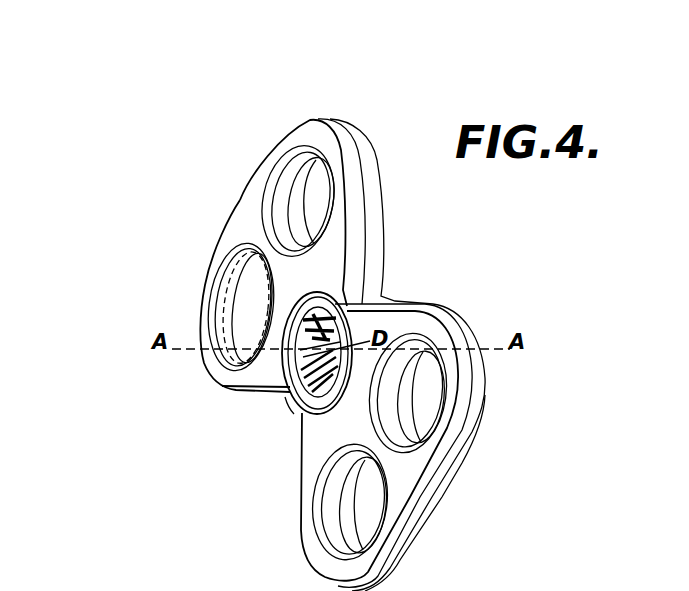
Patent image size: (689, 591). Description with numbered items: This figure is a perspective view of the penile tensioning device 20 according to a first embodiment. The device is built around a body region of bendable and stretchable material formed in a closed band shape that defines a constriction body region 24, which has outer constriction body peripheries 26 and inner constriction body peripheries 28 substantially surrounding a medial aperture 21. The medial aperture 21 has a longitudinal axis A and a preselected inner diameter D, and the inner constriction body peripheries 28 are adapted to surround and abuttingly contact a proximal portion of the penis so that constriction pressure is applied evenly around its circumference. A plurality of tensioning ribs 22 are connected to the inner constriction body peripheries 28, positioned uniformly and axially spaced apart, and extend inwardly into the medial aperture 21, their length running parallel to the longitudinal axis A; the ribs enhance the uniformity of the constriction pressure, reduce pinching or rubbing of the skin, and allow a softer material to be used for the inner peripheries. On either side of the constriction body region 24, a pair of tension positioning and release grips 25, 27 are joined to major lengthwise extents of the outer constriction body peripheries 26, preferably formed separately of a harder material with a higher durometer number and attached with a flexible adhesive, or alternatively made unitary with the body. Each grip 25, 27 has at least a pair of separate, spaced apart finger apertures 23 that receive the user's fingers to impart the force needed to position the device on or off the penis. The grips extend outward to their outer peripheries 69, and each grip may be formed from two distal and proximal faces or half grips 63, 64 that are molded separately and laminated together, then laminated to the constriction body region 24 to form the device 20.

The penile tensioning device 20 is at (152, 272).
The medial aperture 21 is at (293, 393).
The tensioning ribs 22 is at (333, 320).
The finger apertures 23 is at (332, 217).
The constriction body region 24 is at (294, 411).
The tension positioning and release grip 25 is at (200, 353).
The outer constriction body peripheries 26 is at (336, 402).
The tension positioning and release grip 27 is at (452, 398).
The inner constriction body peripheries 28 is at (327, 340).
The half grip 63 is at (327, 143).
The half grip 64 is at (368, 147).
The outer peripheries of the grips 69 is at (452, 482).